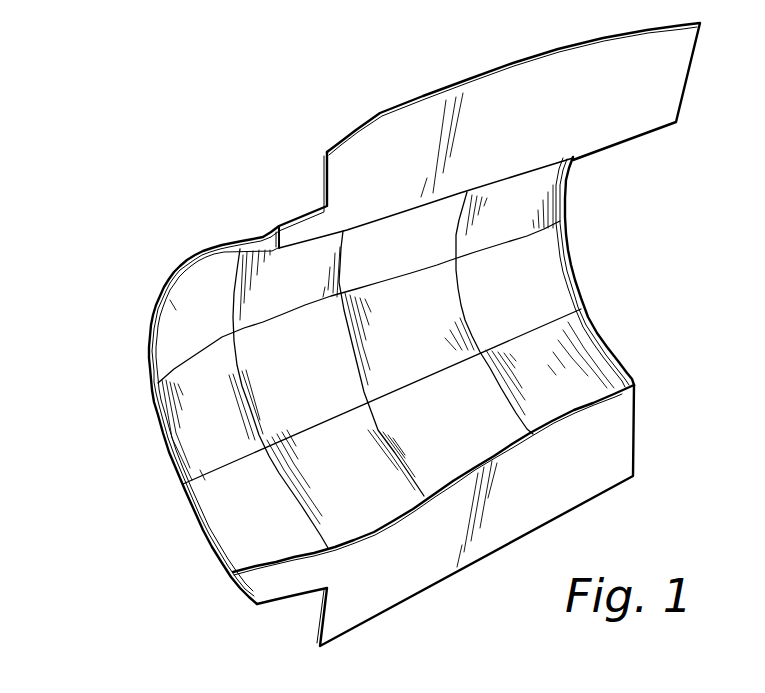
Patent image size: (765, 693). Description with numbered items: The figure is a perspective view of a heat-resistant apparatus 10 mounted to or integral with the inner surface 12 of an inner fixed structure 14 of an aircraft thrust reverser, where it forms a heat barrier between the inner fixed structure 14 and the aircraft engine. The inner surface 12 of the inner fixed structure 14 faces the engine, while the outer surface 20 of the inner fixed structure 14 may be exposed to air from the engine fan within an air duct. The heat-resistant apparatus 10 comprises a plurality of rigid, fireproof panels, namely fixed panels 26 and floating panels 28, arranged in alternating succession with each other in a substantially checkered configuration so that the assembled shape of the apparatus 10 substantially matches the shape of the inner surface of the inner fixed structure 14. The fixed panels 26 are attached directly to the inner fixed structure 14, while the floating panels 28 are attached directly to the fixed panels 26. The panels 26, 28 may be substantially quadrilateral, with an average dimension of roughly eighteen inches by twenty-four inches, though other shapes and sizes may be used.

The heat-resistant apparatus 10 is at (530, 284).
The inner surface 12 is at (577, 476).
The inner fixed structure 14 is at (83, 159).
The outer surface 20 is at (260, 238).
The fixed panels 26 is at (197, 402).
The floating panels 28 is at (181, 312).